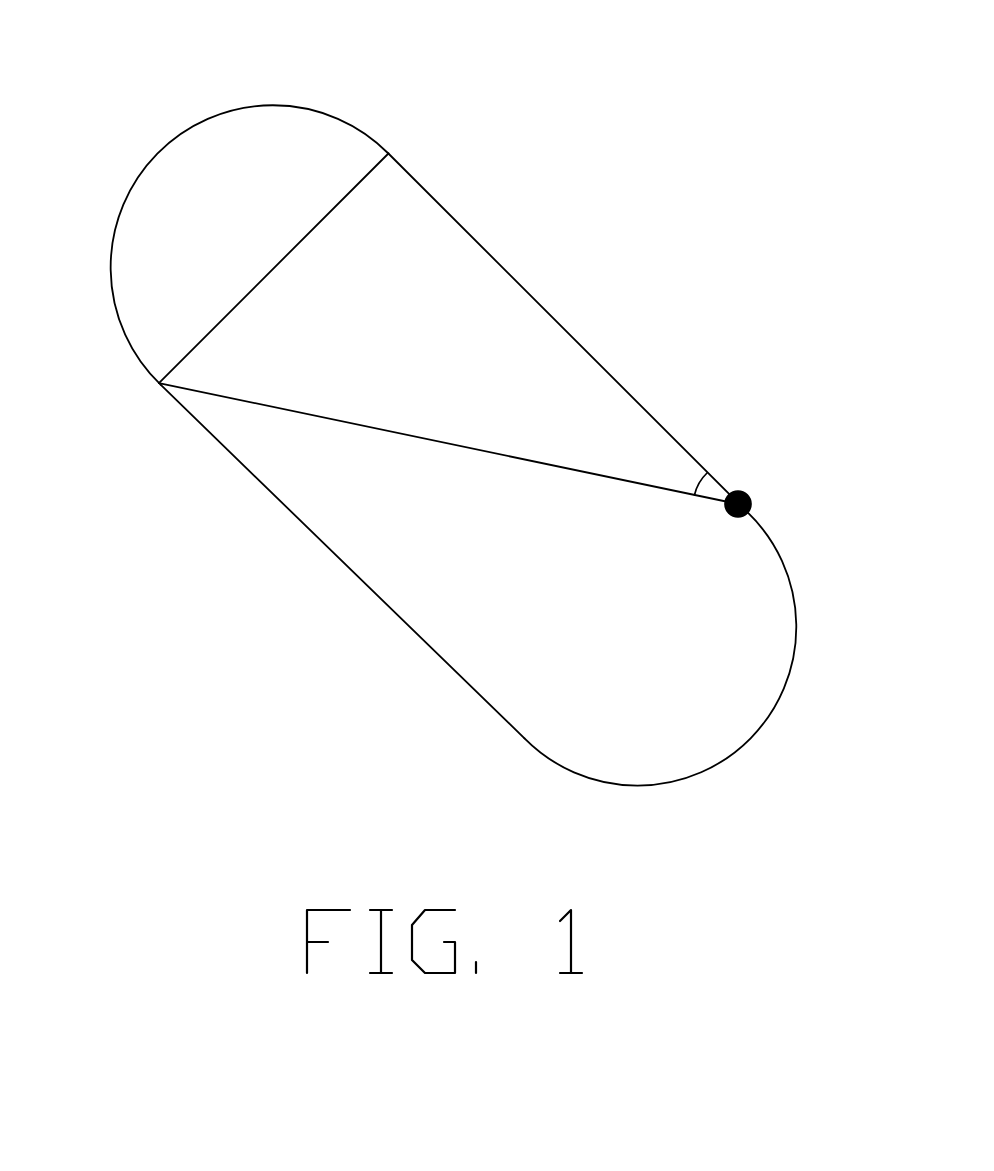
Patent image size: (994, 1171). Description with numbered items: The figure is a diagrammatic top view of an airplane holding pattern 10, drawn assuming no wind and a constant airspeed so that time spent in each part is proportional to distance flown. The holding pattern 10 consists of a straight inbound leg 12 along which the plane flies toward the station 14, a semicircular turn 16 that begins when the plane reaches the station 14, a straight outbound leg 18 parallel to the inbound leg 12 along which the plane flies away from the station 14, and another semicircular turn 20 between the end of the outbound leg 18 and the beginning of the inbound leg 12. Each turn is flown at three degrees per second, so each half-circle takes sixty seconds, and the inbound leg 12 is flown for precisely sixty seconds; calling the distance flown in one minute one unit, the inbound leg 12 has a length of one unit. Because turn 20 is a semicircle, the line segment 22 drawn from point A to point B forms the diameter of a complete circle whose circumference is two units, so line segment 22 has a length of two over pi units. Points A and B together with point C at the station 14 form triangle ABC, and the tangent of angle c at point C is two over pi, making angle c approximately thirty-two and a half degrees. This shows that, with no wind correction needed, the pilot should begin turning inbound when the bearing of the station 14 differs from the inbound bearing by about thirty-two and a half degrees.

The holding pattern 10 is at (463, 411).
The straight inbound leg 12 is at (567, 333).
The station 14 is at (806, 453).
The semicircular turn 16 is at (698, 648).
The straight outbound leg 18 is at (343, 565).
The semicircular turn 20 is at (223, 215).
The line segment 22 is at (304, 269).
The point A is at (90, 407).
The point B is at (442, 92).
The point C is at (830, 501).
The angle c is at (686, 480).